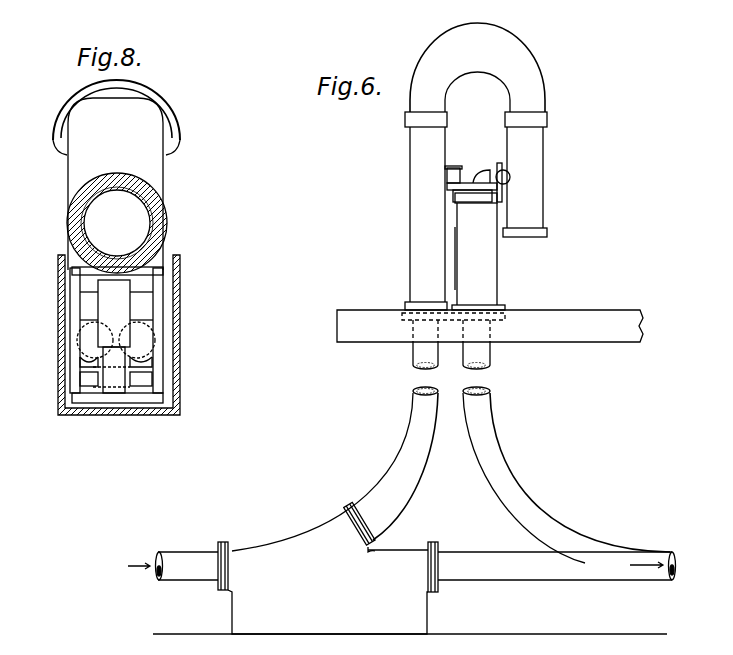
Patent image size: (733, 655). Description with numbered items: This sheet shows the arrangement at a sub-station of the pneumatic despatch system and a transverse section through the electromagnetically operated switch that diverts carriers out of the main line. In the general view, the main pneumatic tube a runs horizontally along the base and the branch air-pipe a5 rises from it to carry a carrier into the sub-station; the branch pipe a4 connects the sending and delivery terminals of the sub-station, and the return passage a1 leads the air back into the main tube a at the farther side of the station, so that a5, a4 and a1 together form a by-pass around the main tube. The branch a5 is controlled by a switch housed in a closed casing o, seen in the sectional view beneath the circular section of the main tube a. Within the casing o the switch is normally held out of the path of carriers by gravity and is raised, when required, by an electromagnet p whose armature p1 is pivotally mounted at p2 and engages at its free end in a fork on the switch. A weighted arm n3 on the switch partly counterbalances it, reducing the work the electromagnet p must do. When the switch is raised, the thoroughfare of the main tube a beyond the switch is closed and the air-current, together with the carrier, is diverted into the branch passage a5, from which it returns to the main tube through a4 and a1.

In FIG. 8, the main pneumatic tube a is at (117, 223).
In FIG. 6, the main pneumatic tube a is at (580, 573).
In FIG. 6, the return branch passage a1 is at (488, 438).
In FIG. 6, the branch pipe a4 is at (496, 168).
In FIG. 6, the branch air-pipe a5 is at (542, 101).
In FIG. 8, the weighted arm n3 is at (118, 300).
In FIG. 8, the electromagnet p is at (140, 375).
In FIG. 8, the armature p1 is at (117, 365).
In FIG. 8, the armature pivot p2 is at (120, 385).
In FIG. 8, the closed casing o is at (122, 416).
In FIG. 6, the closed casing o is at (413, 605).